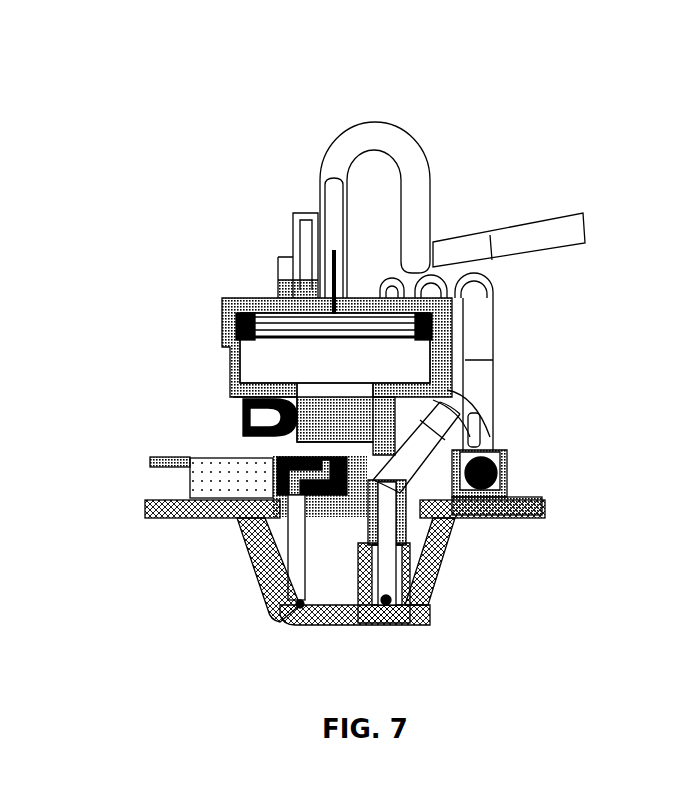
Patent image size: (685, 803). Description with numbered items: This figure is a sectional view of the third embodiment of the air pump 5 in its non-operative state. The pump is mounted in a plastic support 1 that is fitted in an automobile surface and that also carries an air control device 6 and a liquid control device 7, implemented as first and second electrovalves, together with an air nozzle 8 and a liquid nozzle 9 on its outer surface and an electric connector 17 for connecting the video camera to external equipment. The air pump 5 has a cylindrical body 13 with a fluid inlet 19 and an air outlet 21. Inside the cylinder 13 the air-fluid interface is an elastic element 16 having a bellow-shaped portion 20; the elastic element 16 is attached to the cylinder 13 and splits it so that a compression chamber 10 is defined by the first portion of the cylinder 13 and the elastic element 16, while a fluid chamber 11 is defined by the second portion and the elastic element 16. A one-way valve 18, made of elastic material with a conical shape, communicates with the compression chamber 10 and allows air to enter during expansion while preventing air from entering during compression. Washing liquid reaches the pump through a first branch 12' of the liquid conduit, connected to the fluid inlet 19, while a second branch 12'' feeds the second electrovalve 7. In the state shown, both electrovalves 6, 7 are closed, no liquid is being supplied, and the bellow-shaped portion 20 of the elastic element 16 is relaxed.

The support 1 is at (445, 548).
The air pump 5 is at (233, 298).
The air control device 6 is at (200, 470).
The liquid control device 7 is at (505, 477).
The air nozzle 8 is at (298, 602).
The liquid nozzle 9 is at (393, 583).
The compression chamber 10 is at (352, 397).
The fluid chamber 11 is at (380, 314).
The first branch 12' is at (483, 203).
The second branch 12'' is at (541, 331).
The body 13 is at (226, 368).
The elastic element 16 is at (432, 331).
The electric connector 17 is at (289, 272).
The one-way valve 18 is at (252, 418).
The fluid inlet 19 is at (336, 222).
The bellow-shaped portion 20 is at (240, 326).
The air outlet 21 is at (343, 465).